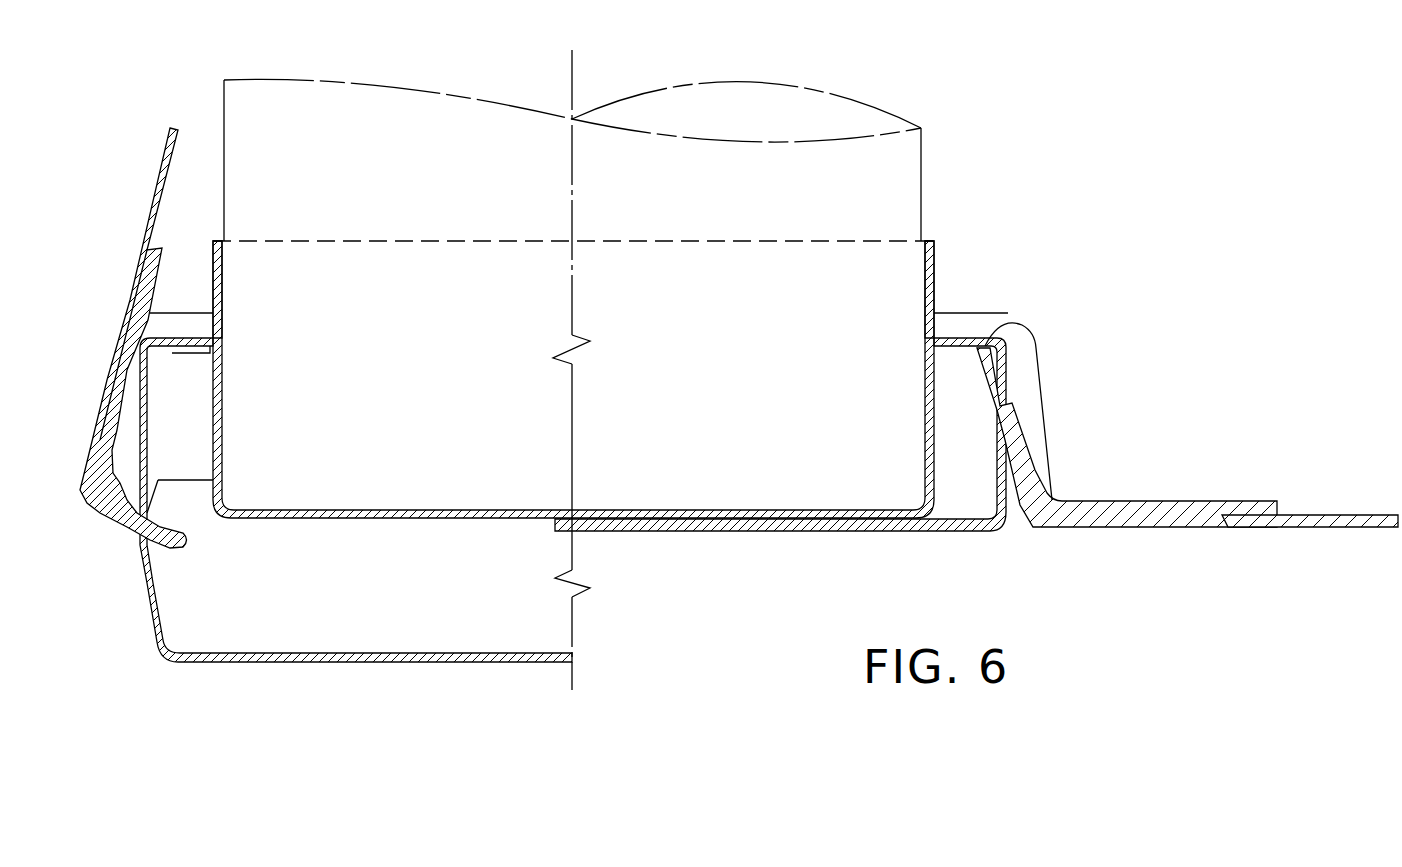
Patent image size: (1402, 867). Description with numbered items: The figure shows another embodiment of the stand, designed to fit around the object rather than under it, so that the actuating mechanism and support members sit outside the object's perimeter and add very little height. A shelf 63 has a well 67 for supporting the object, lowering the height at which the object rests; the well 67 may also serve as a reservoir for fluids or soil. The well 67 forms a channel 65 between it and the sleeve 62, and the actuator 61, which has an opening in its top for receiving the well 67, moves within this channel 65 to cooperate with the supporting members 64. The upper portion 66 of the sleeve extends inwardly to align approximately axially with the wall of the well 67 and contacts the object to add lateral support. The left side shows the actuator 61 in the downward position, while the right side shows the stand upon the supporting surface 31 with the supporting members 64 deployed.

The supporting surface 31 is at (762, 602).
The actuator 61 is at (990, 378).
The sleeve 62 is at (988, 328).
The shelf 63 is at (922, 407).
The supporting members 64 is at (1090, 500).
The channel 65 is at (193, 415).
The upper portion 66 is at (221, 278).
The well 67 is at (697, 415).